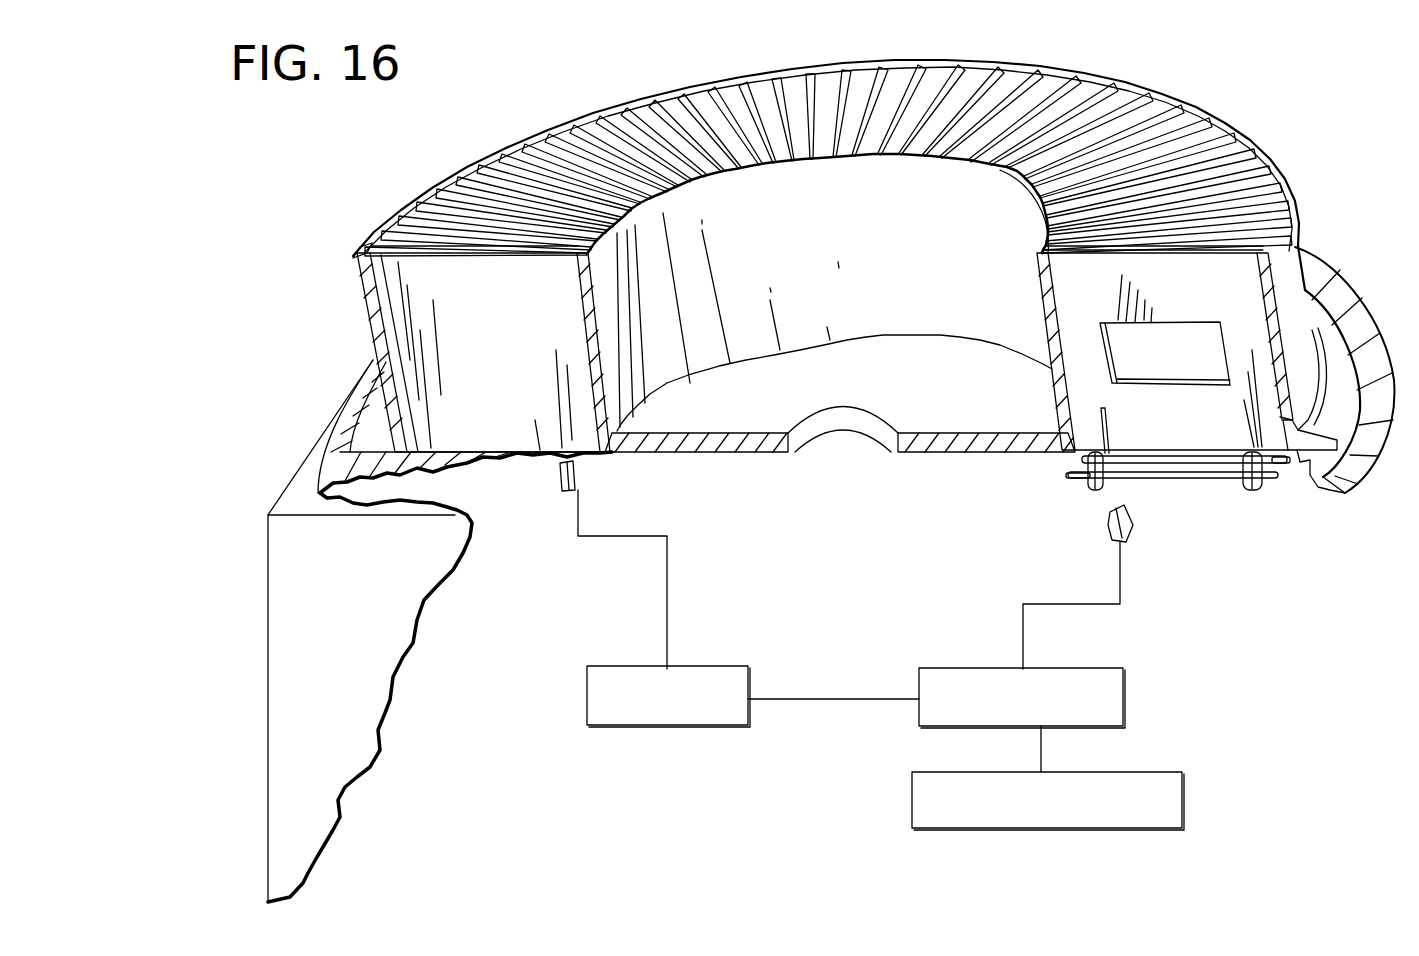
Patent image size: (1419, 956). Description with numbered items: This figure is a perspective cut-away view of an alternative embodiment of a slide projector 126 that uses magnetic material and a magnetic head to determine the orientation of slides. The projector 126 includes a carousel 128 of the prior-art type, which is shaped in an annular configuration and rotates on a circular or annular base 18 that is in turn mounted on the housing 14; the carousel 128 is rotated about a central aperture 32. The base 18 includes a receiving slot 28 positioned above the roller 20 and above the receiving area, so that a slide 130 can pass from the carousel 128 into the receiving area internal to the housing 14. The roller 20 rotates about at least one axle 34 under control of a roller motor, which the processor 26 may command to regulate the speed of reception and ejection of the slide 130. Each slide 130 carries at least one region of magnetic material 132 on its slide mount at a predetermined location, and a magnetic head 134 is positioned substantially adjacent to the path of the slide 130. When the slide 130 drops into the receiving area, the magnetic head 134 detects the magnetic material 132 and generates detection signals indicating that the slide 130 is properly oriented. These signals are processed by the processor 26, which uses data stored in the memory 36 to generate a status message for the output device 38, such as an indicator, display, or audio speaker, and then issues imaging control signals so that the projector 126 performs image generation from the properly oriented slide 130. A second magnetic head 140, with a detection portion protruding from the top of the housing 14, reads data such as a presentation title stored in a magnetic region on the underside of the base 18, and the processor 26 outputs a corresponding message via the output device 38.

The housing 14 is at (292, 498).
The base 18 is at (380, 424).
The roller 20 is at (1252, 505).
The processor 26 is at (1098, 669).
The receiving slot 28 is at (1303, 492).
The central aperture 32 is at (910, 394).
The axle 34 is at (1082, 471).
The memory 36 is at (592, 680).
The output device 38 is at (912, 800).
The projector 126 is at (741, 56).
The carousel 128 is at (1118, 74).
The slide 130 is at (1070, 297).
The region of magnetic material 132 is at (1108, 426).
The magnetic head 134 is at (1132, 512).
The second magnetic head 140 is at (568, 490).